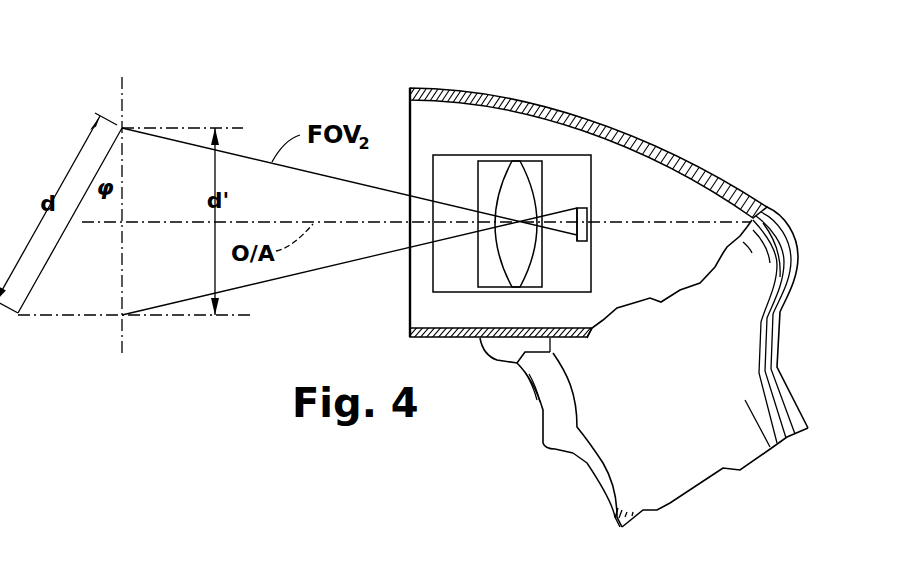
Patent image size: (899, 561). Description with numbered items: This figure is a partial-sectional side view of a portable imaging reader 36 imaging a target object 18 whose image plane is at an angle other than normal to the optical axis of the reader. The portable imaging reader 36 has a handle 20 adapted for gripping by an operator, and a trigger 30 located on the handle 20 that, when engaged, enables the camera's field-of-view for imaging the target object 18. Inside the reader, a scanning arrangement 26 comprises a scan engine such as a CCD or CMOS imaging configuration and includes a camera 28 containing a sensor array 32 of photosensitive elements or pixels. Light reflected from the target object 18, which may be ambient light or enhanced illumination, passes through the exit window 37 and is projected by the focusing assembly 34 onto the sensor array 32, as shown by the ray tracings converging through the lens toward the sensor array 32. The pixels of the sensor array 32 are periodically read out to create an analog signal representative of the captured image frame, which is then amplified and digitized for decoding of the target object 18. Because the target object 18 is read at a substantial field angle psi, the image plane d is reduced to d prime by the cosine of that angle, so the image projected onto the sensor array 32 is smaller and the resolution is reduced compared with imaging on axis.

The target object 18 is at (44, 267).
The handle 20 is at (763, 407).
The scanning arrangement 26 is at (527, 155).
The camera 28 is at (587, 233).
The trigger 30 is at (558, 417).
The sensor array 32 is at (575, 210).
The focusing assembly 34 is at (478, 187).
The portable imaging reader 36 is at (657, 112).
The exit window 37 is at (408, 128).